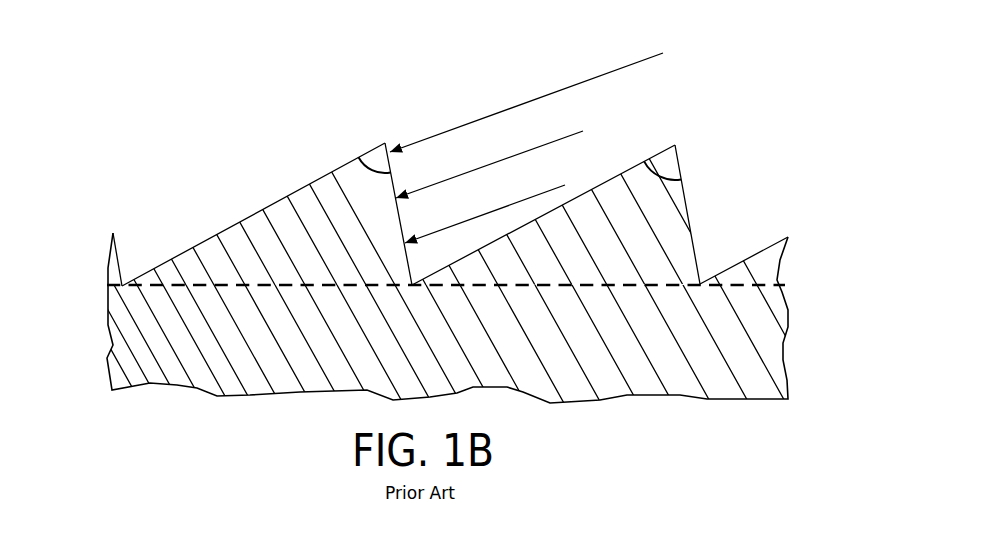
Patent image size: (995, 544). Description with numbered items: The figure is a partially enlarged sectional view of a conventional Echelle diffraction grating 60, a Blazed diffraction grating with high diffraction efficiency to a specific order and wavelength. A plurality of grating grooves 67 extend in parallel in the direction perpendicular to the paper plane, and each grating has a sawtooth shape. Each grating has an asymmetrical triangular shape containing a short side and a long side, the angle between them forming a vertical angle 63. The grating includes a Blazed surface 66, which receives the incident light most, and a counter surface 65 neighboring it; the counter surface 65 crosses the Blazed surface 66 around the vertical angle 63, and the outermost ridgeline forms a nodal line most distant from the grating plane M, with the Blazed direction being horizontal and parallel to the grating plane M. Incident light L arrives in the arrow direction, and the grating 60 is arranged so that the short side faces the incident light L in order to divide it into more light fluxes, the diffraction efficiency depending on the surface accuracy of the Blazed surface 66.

The Echelle diffraction grating 60 is at (180, 113).
The vertical angle 63 is at (724, 86).
The counter surface 65 is at (267, 205).
The Blazed surface 66 is at (392, 183).
The grating groove 67 is at (498, 137).
The incident light L is at (563, 185).
The grating plane M is at (177, 283).